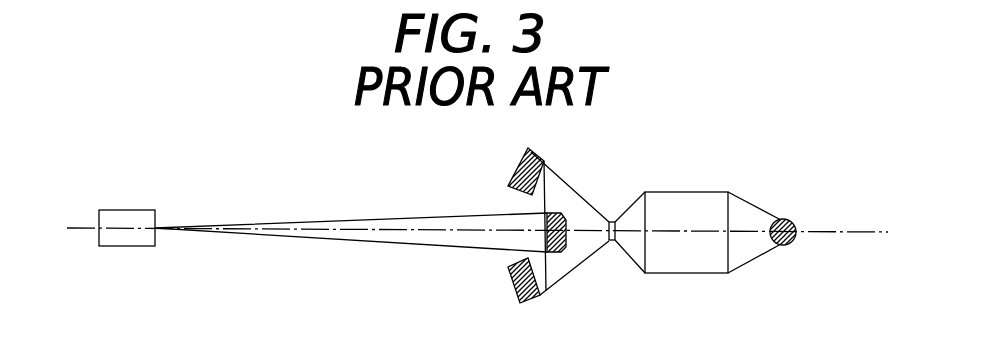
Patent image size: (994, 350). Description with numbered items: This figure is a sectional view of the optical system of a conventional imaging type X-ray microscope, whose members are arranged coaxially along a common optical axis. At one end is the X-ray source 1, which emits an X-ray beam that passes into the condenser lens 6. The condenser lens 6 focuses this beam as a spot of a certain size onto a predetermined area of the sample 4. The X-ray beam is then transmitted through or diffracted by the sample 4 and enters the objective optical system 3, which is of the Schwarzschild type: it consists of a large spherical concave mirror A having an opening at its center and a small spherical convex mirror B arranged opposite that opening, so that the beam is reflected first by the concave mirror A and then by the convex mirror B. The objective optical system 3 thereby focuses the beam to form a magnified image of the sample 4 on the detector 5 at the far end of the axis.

The X-ray source 1 is at (784, 219).
The objective optical system 3 is at (520, 217).
The sample 4 is at (611, 222).
The detector 5 is at (140, 210).
The condenser lens 6 is at (703, 200).
The concave mirror A is at (547, 187).
The convex mirror B is at (547, 219).